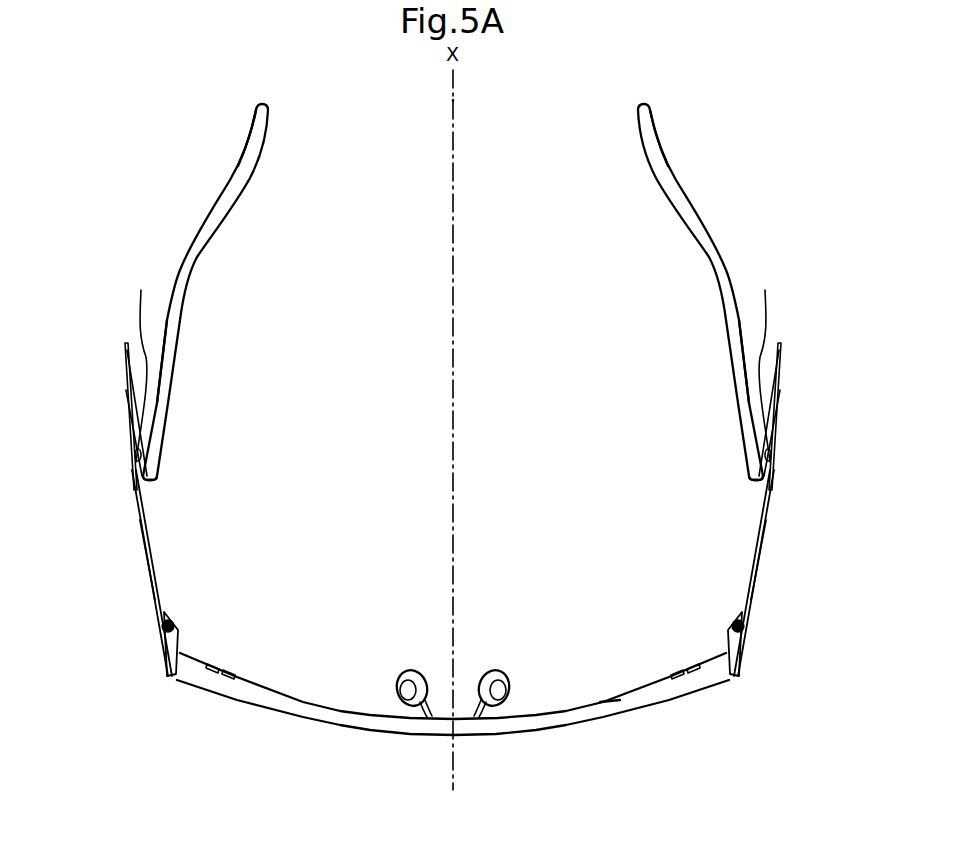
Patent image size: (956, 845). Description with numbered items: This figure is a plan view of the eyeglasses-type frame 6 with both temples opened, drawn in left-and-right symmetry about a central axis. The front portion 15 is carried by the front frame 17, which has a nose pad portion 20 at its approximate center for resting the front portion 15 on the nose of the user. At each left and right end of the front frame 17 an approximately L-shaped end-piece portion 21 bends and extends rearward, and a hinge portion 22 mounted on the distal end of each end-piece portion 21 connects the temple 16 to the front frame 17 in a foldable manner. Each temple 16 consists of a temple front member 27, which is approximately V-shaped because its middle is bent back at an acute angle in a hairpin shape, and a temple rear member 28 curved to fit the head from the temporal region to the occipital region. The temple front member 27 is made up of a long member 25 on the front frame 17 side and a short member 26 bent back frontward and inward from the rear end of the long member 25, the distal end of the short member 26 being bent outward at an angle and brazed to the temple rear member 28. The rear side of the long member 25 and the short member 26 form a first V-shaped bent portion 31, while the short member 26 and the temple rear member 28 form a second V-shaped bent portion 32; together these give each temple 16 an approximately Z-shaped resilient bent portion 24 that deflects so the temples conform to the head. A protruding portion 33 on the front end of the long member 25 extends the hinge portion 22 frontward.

The eyeglasses-type frame 6 is at (568, 92).
The front portion 15 is at (695, 742).
The temple 16 is at (164, 210).
The front frame 17 is at (256, 699).
The nose pad portion 20 is at (405, 672).
The end-piece portion 21 is at (187, 660).
The hinge portion 22 is at (172, 622).
The resilient bent portion 24 is at (192, 410).
The long member 25 is at (139, 518).
The short member 26 is at (454, 364).
The temple front member 27 is at (134, 557).
The temple rear member 28 is at (238, 190).
The first V-shaped bent portion 31 is at (116, 383).
The second V-shaped bent portion 32 is at (180, 465).
The protruding portion 33 is at (163, 663).